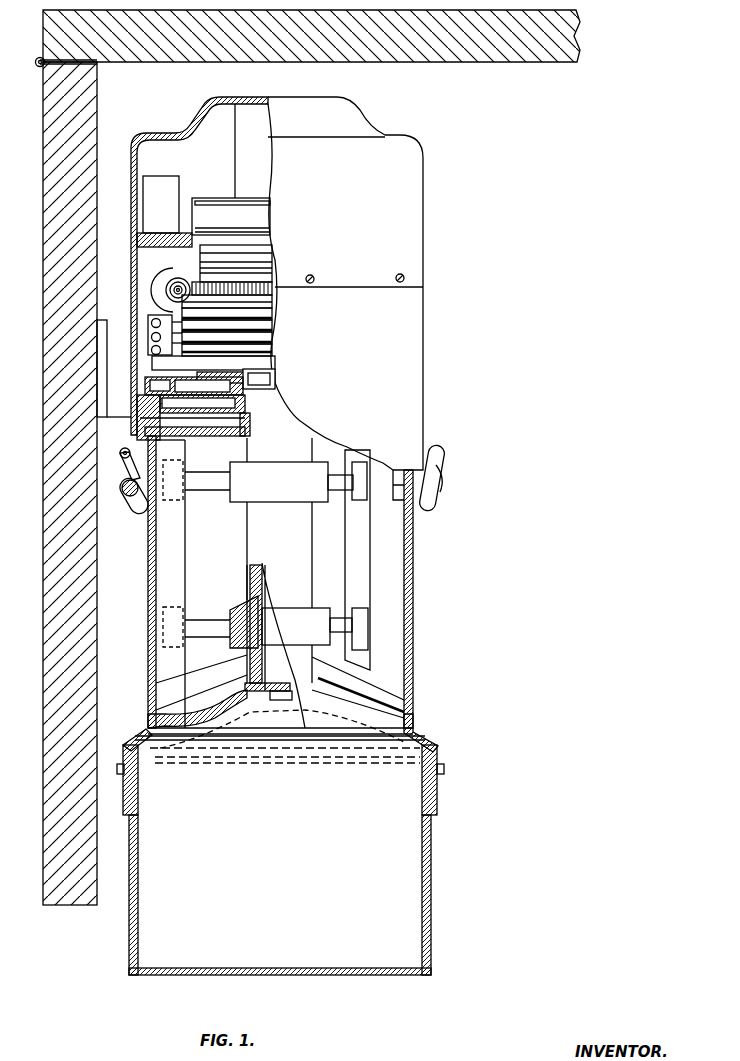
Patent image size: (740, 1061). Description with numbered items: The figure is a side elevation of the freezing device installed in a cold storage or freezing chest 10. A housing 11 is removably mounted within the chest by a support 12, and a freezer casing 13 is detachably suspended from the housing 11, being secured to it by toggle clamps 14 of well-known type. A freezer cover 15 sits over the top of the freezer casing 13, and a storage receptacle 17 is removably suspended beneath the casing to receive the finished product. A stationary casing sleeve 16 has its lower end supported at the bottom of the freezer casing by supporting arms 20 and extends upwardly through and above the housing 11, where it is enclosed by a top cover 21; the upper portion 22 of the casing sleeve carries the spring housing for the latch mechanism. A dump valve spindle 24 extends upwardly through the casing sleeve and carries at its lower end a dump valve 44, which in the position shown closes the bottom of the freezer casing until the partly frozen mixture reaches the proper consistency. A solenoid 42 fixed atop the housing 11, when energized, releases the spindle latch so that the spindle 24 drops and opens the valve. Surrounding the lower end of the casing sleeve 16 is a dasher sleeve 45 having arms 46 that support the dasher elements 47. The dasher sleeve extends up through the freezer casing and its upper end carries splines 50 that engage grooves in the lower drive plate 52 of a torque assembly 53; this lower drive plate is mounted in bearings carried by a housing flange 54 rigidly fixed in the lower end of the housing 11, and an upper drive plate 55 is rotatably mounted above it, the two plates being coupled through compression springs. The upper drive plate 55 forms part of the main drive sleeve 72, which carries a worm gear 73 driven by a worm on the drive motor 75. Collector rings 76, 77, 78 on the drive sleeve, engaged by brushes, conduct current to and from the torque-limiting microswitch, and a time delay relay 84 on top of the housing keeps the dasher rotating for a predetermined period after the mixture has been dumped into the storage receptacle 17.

The cold storage or freezing chest 10 is at (52, 340).
The housing 11 is at (413, 339).
The support 12 is at (100, 398).
The freezer casing 13 is at (412, 578).
The toggle clamps 14 is at (120, 490).
The freezer cover 15 is at (140, 428).
The casing sleeve 16 is at (258, 565).
The storage receptacle 17 is at (435, 848).
The supporting arms 20 is at (168, 688).
The top cover 21 is at (415, 167).
The upper portion of casing sleeve 22 is at (233, 143).
The dump valve spindle 24 is at (265, 677).
The solenoid 42 is at (237, 210).
The dump valve 44 is at (206, 720).
The dasher sleeve 45 is at (250, 578).
The arms 46 is at (208, 480).
The dasher elements 47 is at (185, 560).
The splines 50 is at (258, 381).
The lower drive plate 52 is at (150, 380).
The torque assembly 53 is at (150, 392).
The housing flange 54 is at (210, 400).
The upper drive plate 55 is at (270, 365).
The drive sleeve 72 is at (265, 302).
The worm gear 73 is at (262, 291).
The drive motor 75 is at (180, 283).
The collector ring 76 is at (262, 325).
The collector ring 77 is at (265, 338).
The collector ring 78 is at (268, 351).
The time delay relay 84 is at (155, 187).